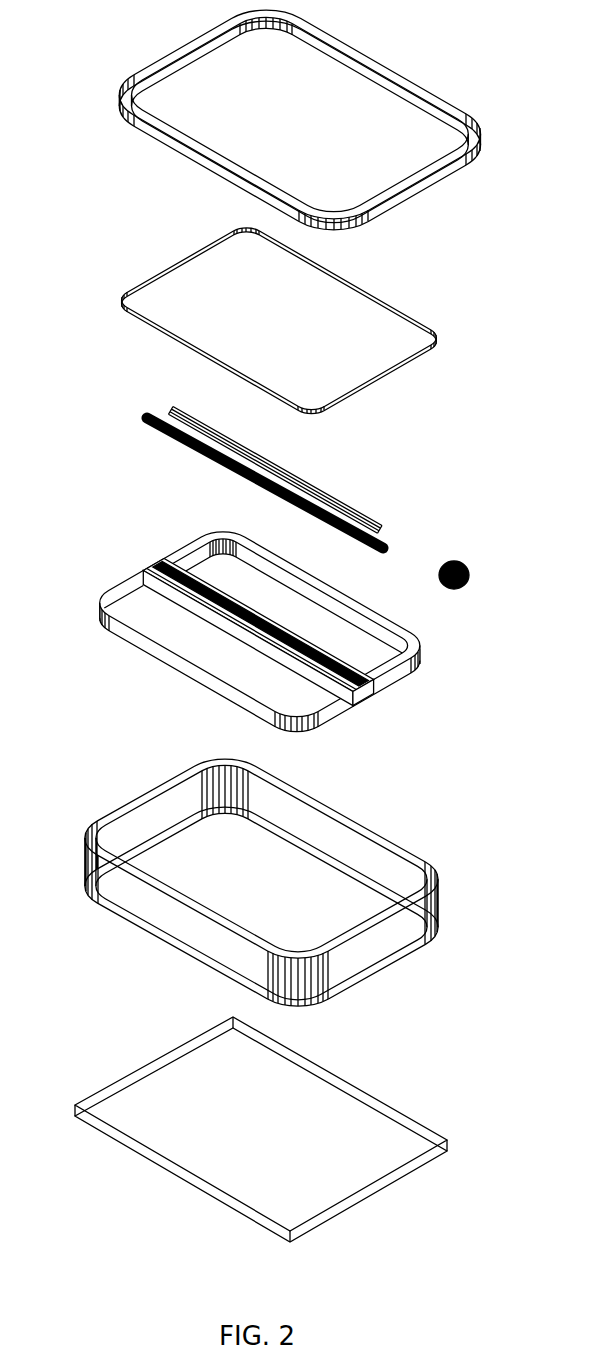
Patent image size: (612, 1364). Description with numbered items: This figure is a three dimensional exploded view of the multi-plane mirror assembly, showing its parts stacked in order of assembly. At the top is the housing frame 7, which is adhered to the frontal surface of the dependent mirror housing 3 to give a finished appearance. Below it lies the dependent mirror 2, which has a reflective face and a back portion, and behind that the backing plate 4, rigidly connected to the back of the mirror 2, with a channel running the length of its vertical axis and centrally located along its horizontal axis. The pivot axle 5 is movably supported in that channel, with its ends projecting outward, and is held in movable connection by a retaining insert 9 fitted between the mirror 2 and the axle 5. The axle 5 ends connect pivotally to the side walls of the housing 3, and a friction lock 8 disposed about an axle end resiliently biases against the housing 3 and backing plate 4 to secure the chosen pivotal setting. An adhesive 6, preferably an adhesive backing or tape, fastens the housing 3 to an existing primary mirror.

The dependent mirror 2 is at (428, 322).
The dependent mirror housing 3 is at (425, 857).
The backing plate 4 is at (417, 667).
The pivot axle 5 is at (384, 517).
The adhesive 6 is at (158, 1058).
The housing frame 7 is at (185, 153).
The friction lock 8 is at (463, 562).
The retaining insert 9 is at (167, 413).